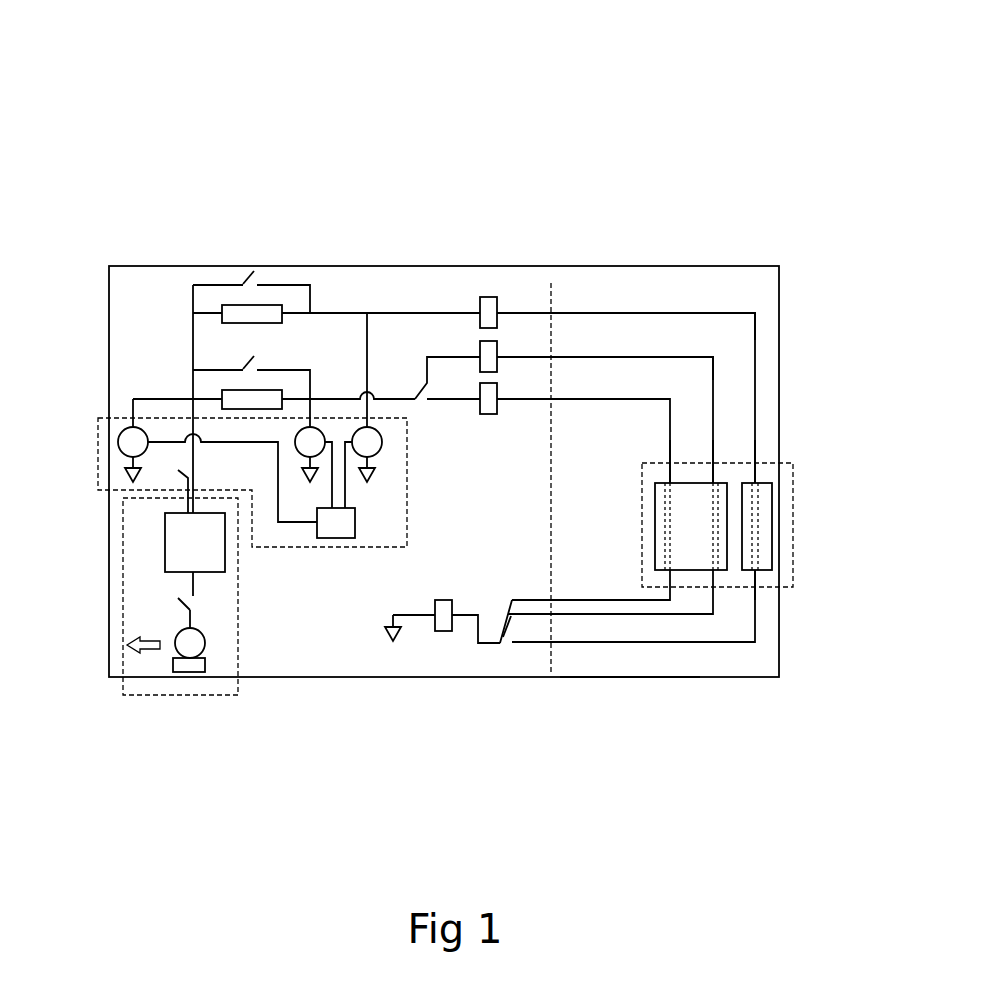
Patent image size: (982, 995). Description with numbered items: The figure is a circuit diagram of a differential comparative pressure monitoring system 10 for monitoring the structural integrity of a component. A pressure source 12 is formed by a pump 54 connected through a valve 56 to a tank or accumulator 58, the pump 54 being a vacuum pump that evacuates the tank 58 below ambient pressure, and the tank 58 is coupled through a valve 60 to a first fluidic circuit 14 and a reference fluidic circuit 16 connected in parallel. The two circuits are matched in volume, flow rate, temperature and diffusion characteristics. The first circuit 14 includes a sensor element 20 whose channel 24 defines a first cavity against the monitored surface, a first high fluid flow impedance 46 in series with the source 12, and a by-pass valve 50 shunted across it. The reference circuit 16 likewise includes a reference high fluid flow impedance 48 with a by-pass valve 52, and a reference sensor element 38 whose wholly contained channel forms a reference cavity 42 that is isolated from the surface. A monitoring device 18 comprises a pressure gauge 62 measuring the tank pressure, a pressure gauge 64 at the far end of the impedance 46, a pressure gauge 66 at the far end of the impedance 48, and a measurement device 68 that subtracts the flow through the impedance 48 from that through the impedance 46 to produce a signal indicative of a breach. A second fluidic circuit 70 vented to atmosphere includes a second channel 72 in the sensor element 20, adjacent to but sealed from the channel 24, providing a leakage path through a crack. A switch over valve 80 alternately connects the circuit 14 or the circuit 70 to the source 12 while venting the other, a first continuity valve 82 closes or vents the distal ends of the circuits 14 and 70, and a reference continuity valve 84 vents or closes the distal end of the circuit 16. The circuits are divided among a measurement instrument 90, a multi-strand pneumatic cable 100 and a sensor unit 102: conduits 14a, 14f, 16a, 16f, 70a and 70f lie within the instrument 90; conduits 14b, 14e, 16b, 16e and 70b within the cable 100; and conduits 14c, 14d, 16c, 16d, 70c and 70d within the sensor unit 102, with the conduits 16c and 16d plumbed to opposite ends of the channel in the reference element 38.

The differential comparative pressure monitoring system 10 is at (548, 99).
The pressure source 12 is at (121, 613).
The first fluidic circuit 14 is at (637, 389).
The conduit 14a is at (515, 398).
The conduit 14b is at (588, 400).
The conduit 14c is at (654, 484).
The conduit 14d is at (668, 582).
The conduit 14e is at (572, 598).
The conduit 14f is at (535, 598).
The reference fluidic circuit 16 is at (605, 300).
The conduit 16a is at (500, 313).
The conduit 16b is at (757, 312).
The conduit 16c is at (757, 469).
The conduit 16d is at (758, 574).
The conduit 16e is at (728, 641).
The conduit 16f is at (527, 632).
The monitoring device 18 is at (93, 469).
The sensor element 20 is at (692, 478).
The channel 24 is at (697, 535).
The reference sensor element 38 is at (774, 500).
The reference cavity 42 is at (760, 540).
The first high fluid flow impedance 46 is at (223, 392).
The reference high fluid flow impedance 48 is at (225, 303).
The by-pass valve 50 is at (252, 358).
The by-pass valve 52 is at (247, 279).
The pump 54 is at (176, 648).
The valve 56 is at (181, 599).
The tank or accumulator 58 is at (165, 540).
The valve 60 is at (178, 470).
The pressure gauge 62 is at (120, 433).
The pressure gauge 64 is at (277, 515).
The pressure gauge 66 is at (390, 452).
The measurement device 68 is at (338, 540).
The second fluidic circuit 70 is at (617, 342).
The conduit 70a is at (505, 357).
The conduit 70b is at (715, 369).
The conduit 70c is at (715, 480).
The conduit 70d is at (714, 572).
The conduit 70f is at (512, 644).
The second groove or channel 72 is at (678, 563).
The switch over valve 80 is at (420, 397).
The first continuity valve 82 is at (508, 606).
The reference continuity valve 84 is at (505, 638).
The measurement instrument 90 is at (542, 681).
The multi-strand pneumatic cable 100 is at (610, 681).
The sensor unit 102 is at (795, 523).